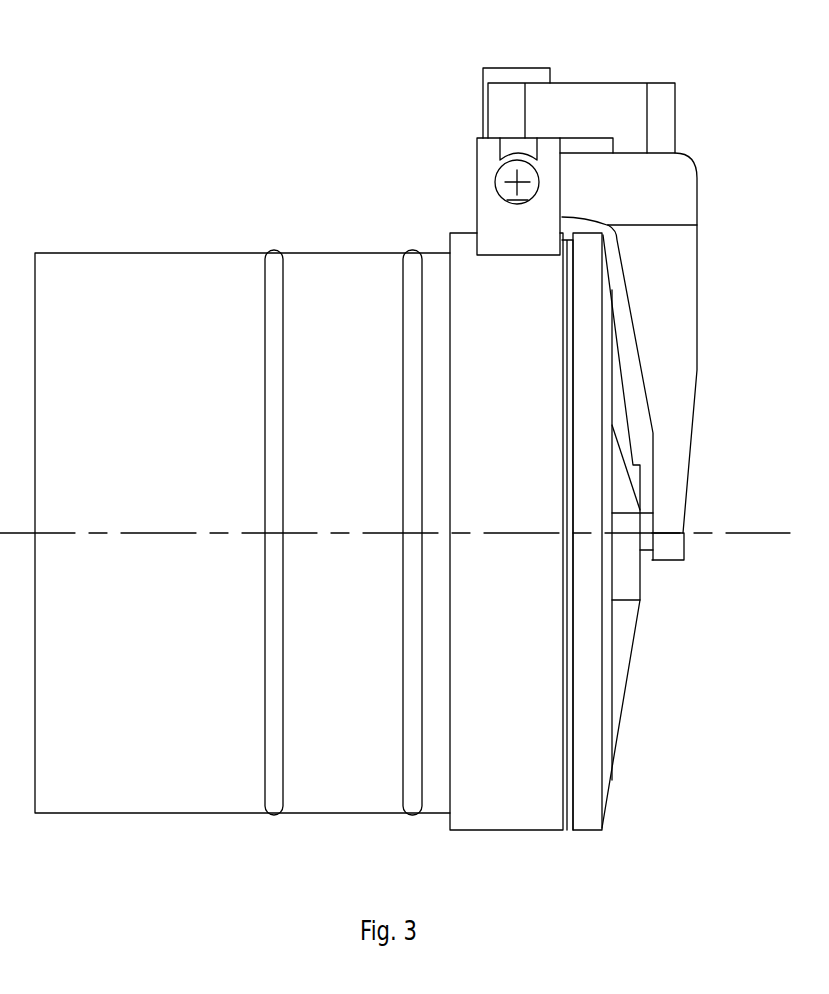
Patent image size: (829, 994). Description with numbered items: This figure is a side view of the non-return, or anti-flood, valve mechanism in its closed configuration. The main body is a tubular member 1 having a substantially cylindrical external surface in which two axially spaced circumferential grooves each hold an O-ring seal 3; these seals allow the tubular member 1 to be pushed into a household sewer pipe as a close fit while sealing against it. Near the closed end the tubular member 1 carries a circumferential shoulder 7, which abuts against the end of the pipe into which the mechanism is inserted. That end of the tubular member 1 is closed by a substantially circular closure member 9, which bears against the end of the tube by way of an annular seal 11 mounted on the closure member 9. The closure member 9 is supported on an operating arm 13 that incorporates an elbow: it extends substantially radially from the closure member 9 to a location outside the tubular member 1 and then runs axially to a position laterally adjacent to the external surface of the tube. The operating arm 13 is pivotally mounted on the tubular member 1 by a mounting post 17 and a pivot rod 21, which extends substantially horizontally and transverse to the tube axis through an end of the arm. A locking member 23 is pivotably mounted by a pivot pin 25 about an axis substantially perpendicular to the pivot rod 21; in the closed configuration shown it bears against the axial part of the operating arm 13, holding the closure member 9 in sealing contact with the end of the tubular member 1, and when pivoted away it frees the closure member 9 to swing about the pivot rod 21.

The tubular member 1 is at (157, 253).
The O-ring seal 3 is at (273, 252).
The circumferential shoulder 7 is at (448, 243).
The closure member 9 is at (632, 660).
The annular seal 11 is at (567, 830).
The operating arm 13 is at (697, 367).
The mounting post 17 is at (477, 168).
The pivot rod 21 is at (519, 181).
The locking member 23 is at (675, 103).
The pivot pin 25 is at (515, 68).